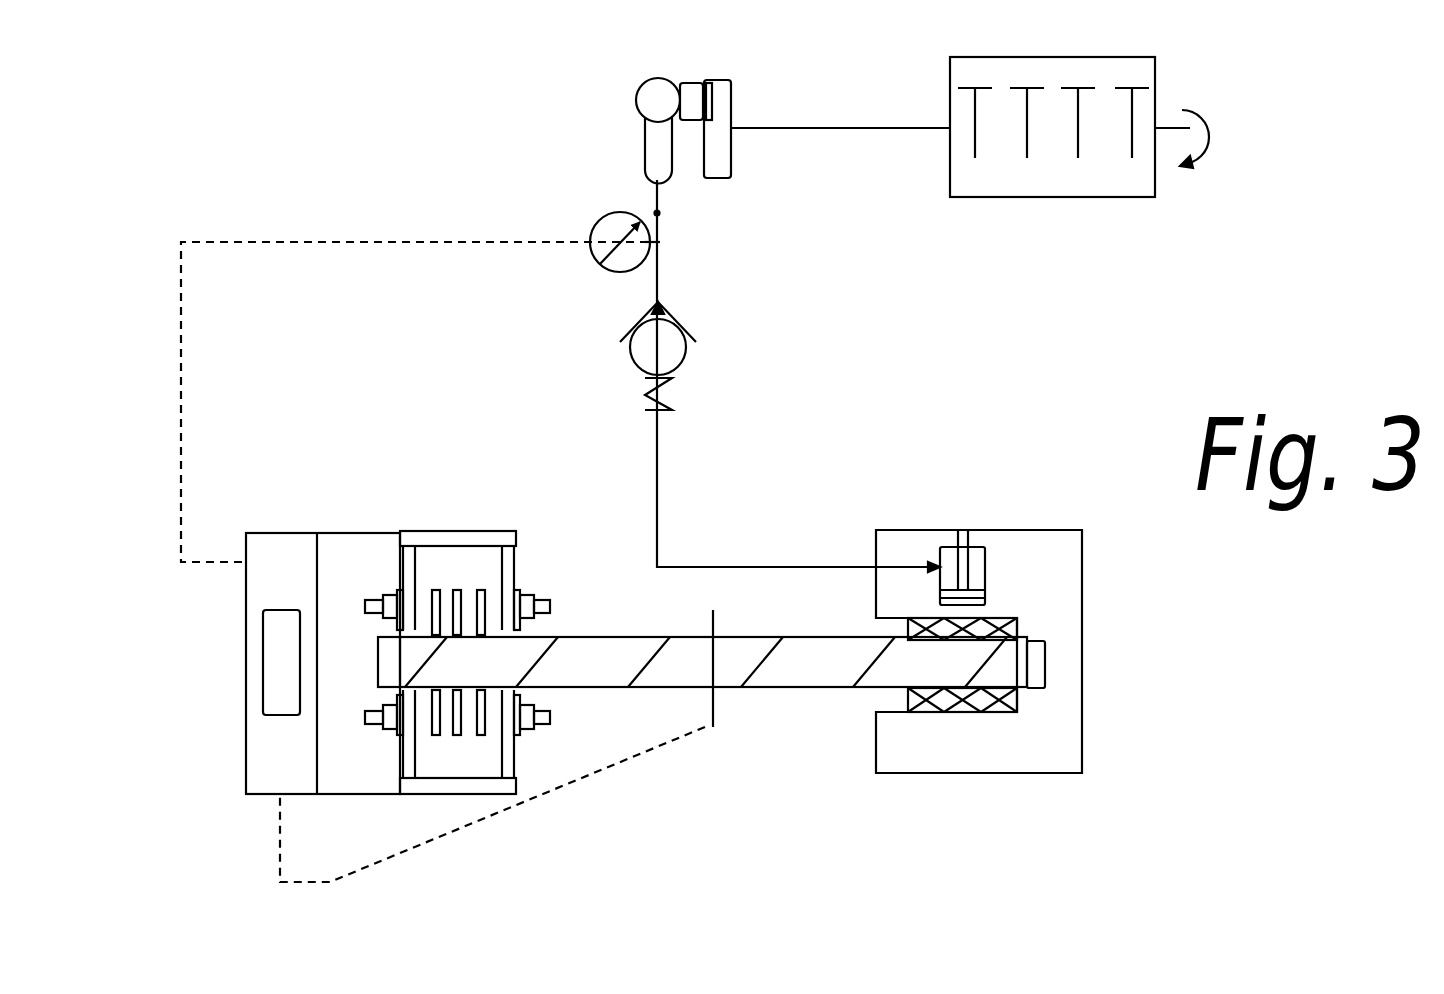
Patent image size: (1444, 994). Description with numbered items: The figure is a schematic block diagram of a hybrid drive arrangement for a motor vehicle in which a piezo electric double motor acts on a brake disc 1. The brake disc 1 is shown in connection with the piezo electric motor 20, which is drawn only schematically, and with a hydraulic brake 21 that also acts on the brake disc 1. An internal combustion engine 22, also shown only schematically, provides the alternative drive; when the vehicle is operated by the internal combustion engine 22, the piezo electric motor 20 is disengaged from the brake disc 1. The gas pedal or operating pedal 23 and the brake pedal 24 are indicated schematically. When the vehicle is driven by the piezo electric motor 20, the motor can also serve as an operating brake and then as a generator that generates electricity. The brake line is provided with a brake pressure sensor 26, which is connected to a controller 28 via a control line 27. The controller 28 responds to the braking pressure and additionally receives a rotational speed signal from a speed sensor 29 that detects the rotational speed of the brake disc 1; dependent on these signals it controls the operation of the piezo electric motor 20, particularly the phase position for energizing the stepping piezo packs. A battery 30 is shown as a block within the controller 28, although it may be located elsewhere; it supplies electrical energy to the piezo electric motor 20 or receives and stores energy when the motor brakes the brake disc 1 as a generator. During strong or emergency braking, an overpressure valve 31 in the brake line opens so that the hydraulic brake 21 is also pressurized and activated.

The brake disc 1 is at (637, 657).
The piezo electric motor 20 is at (420, 530).
The hydraulic brake 21 is at (1037, 557).
The internal combustion engine 22 is at (1061, 172).
The operating pedal 23 is at (722, 157).
The brake pedal 24 is at (655, 103).
The brake pressure sensor 26 is at (612, 262).
The control line 27 is at (312, 242).
The controller 28 is at (272, 588).
The speed sensor 29 is at (715, 710).
The battery 30 is at (275, 668).
The overpressure valve 31 is at (672, 358).